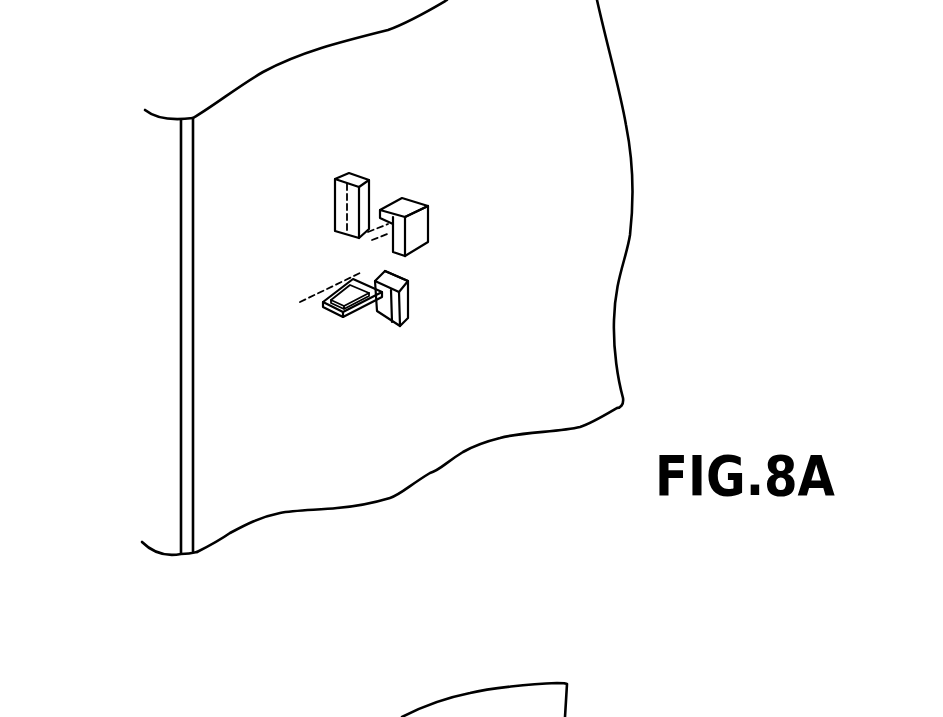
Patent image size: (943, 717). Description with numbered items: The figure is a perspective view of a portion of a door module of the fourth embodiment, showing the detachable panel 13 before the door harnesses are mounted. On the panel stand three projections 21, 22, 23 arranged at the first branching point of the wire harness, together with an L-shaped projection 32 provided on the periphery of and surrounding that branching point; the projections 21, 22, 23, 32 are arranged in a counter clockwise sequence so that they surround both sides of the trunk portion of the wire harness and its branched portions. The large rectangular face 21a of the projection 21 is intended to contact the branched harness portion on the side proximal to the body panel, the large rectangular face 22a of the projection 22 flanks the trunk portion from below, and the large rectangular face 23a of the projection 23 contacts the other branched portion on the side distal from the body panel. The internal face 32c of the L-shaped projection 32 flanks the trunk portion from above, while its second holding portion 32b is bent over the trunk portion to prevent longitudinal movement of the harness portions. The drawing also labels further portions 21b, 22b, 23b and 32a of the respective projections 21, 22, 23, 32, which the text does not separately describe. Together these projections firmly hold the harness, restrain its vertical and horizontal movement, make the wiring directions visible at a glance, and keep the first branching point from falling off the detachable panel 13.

The detachable panel 13 is at (227, 263).
The projection 21 is at (335, 207).
The large rectangular face 21a is at (360, 172).
The hidden engaging portion of first block 21b is at (333, 237).
The projection 22 is at (350, 320).
The large rectangular face 22a is at (327, 320).
The hidden engaging portion of second block 22b is at (300, 302).
The projection 23 is at (410, 312).
The large rectangular face 23a is at (384, 322).
The top portion of third block 23b is at (408, 276).
The L-shaped projection 32 is at (424, 199).
The leg of bracket 32a is at (401, 194).
The second holding portion 32b is at (428, 222).
The internal face 32c is at (372, 240).